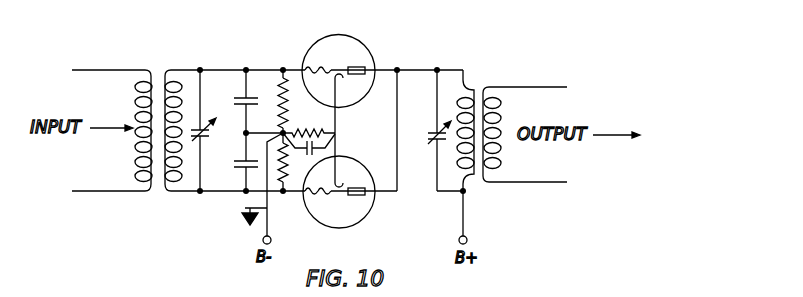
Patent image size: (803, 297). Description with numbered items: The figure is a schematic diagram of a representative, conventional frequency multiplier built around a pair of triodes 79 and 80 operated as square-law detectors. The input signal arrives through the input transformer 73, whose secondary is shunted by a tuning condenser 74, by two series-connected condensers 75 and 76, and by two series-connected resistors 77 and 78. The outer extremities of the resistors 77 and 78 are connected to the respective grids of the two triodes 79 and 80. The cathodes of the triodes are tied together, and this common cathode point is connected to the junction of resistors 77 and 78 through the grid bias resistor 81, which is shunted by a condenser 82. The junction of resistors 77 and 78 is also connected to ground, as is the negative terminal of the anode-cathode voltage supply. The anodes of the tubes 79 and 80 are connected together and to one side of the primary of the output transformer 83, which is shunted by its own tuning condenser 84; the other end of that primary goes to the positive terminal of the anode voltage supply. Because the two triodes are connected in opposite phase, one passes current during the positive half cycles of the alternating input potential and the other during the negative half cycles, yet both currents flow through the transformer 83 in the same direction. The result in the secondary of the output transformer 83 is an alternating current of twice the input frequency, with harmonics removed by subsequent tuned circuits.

The input transformer 73 is at (157, 85).
The tuning condenser 74 is at (213, 121).
The condenser 75 is at (250, 72).
The condenser 76 is at (242, 167).
The resistor 77 is at (288, 78).
The resistor 78 is at (283, 185).
The triode 79 is at (359, 41).
The triode 80 is at (362, 220).
The grid bias resistor 81 is at (326, 133).
The condenser 82 is at (315, 146).
The output transformer 83 is at (476, 97).
The tuning condenser 84 is at (432, 130).